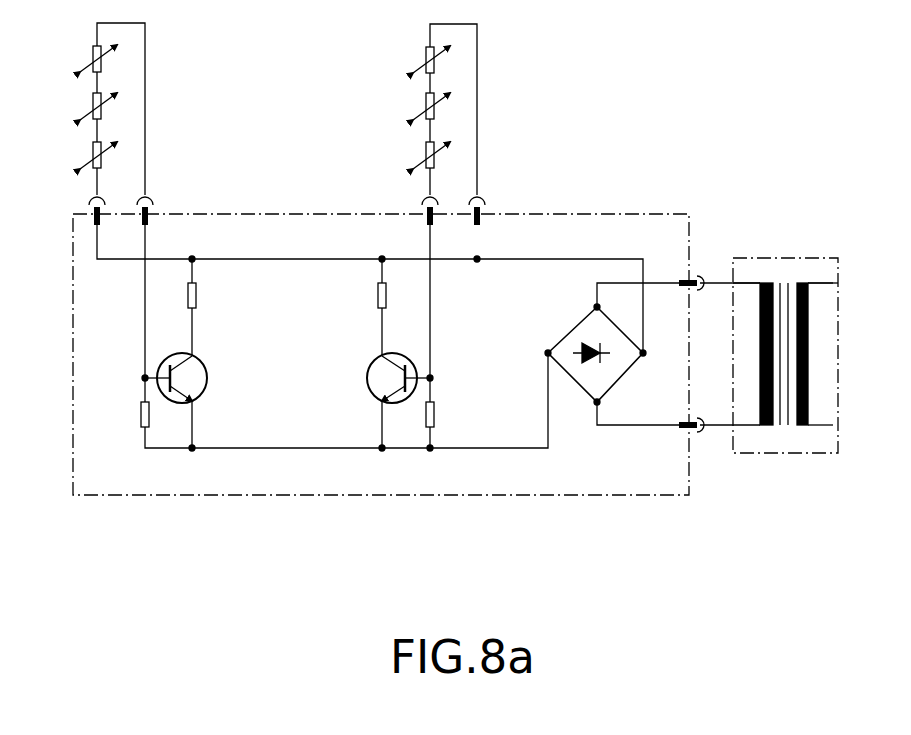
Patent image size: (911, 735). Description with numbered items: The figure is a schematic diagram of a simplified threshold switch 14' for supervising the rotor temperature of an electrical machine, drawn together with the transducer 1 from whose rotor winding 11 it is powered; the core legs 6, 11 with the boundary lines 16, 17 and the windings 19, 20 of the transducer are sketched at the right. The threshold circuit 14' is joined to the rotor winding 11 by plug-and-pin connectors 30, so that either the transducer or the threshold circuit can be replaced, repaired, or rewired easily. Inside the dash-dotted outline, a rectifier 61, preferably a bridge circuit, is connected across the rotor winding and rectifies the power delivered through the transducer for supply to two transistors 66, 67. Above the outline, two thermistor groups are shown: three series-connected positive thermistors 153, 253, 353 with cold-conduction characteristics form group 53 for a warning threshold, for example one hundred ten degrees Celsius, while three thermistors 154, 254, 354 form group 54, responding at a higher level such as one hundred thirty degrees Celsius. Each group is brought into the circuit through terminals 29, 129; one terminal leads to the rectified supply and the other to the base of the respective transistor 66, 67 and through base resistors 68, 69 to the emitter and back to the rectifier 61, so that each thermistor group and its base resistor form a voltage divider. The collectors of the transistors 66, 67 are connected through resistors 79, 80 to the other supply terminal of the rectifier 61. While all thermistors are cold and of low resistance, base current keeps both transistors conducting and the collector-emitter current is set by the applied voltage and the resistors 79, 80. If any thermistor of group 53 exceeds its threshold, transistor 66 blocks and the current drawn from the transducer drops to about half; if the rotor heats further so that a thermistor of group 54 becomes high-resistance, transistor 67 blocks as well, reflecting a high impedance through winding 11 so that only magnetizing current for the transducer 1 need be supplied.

The transducer 1 is at (769, 366).
The core leg 6 is at (808, 372).
The rotor winding 11 is at (760, 372).
The threshold switch 14' is at (381, 390).
The air gap boundary 16 is at (788, 283).
The air gap boundary 17 is at (780, 283).
The winding 19 is at (745, 283).
The winding 20 is at (822, 283).
The terminals 29 is at (101, 217).
The plug-and-pin connectors 30 is at (685, 278).
The positive thermistor group 53 is at (102, 109).
The thermistor group 54 is at (438, 109).
The rectifier 61 is at (578, 326).
The transistor 66 is at (208, 378).
The transistor 67 is at (367, 378).
The base resistor 68 is at (141, 414).
The base resistor 69 is at (434, 414).
The resistor 79 is at (196, 294).
The resistor 80 is at (378, 294).
The terminals 129 is at (433, 222).
The positive thermistor 153 is at (93, 52).
The thermistor 154 is at (426, 50).
The positive thermistor 253 is at (93, 105).
The thermistor 254 is at (426, 100).
The positive thermistor 353 is at (71, 151).
The thermistor 354 is at (469, 131).